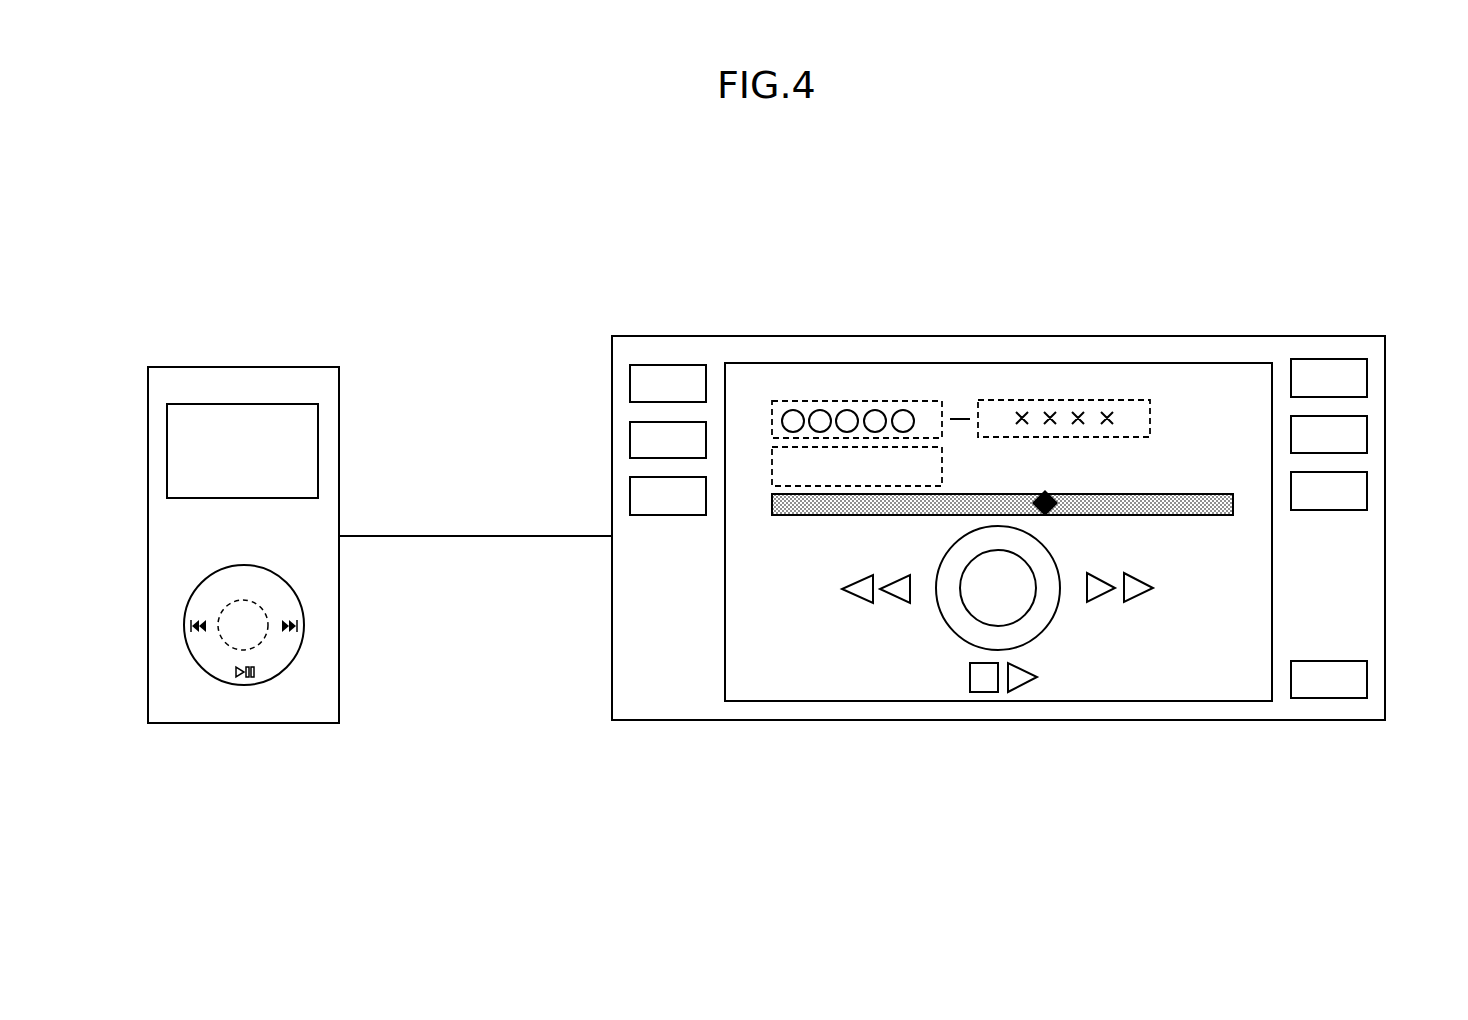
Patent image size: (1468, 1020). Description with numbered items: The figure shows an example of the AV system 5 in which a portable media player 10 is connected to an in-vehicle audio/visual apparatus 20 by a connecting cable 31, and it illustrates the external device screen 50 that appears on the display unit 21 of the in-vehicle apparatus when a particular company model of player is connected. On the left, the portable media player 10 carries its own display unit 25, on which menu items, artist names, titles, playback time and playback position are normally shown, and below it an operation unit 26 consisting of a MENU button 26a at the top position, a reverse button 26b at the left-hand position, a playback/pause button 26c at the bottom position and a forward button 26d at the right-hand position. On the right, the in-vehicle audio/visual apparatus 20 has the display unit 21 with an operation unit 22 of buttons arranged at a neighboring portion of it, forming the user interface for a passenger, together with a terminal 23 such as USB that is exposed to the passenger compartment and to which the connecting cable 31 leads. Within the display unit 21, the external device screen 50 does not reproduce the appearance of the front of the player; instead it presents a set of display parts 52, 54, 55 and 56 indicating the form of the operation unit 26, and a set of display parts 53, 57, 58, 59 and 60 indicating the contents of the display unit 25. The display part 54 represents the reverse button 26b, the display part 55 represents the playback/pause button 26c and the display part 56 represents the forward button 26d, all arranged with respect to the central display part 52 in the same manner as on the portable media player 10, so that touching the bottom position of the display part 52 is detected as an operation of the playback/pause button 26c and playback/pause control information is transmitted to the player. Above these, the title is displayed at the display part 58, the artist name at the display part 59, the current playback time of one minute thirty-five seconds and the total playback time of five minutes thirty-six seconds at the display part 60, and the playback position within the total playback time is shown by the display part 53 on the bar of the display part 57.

The AV system 5 is at (476, 312).
The portable media player 10 is at (297, 367).
The in-vehicle audio/visual apparatus 20 is at (878, 324).
The display unit 21 is at (793, 362).
The operation unit 22 is at (630, 495).
The terminal 23 is at (1367, 678).
The display unit 25 is at (240, 404).
The operation unit 26 is at (243, 642).
The MENU button 26a is at (248, 566).
The reverse button 26b is at (183, 626).
The playback/pause button 26c is at (243, 686).
The forward button 26d is at (305, 622).
The connecting cable 31 is at (455, 536).
The external device screen 50 is at (990, 508).
The display part 52 is at (948, 625).
The display part 53 is at (1058, 492).
The display part 54 is at (848, 580).
The display part 55 is at (1022, 696).
The display part 56 is at (1147, 580).
The display part 57 is at (1178, 493).
The display part 58 is at (763, 428).
The display part 59 is at (1153, 413).
The display part 60 is at (766, 460).